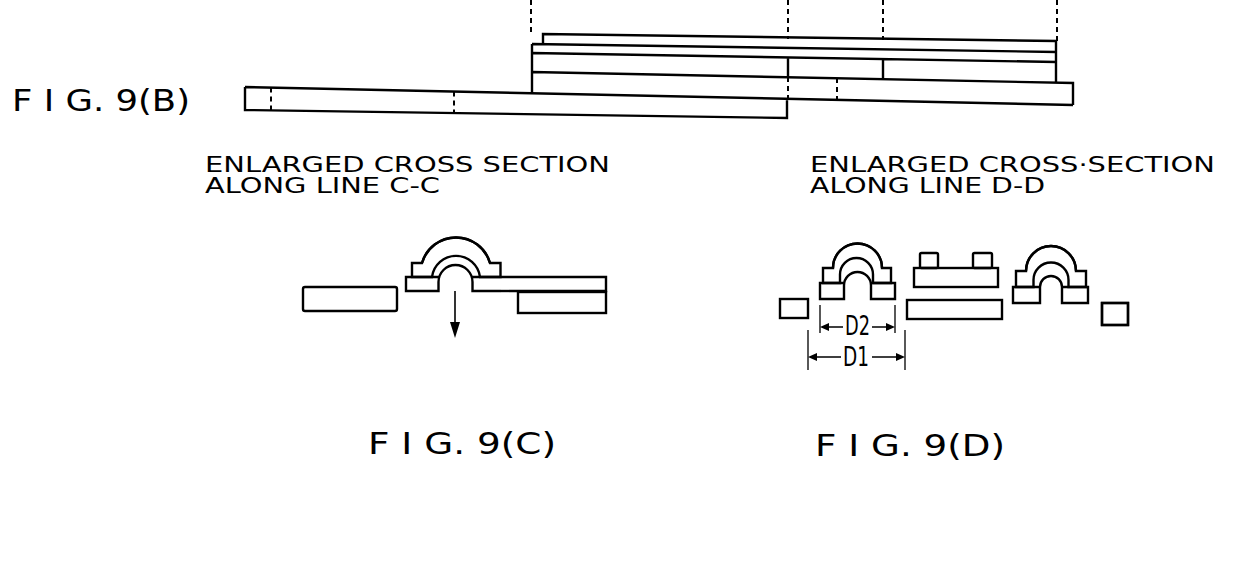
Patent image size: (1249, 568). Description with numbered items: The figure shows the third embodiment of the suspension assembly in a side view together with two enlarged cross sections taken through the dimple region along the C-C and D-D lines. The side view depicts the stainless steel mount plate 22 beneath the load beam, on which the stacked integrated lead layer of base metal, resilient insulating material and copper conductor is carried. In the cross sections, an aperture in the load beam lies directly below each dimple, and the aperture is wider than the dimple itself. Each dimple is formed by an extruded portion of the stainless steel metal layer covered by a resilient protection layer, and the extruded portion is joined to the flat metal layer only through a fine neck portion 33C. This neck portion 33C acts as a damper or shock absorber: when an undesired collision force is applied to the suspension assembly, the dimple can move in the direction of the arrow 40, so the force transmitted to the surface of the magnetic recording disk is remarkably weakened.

The mount plate 22 is at (787, 105).
The neck portion 33C is at (508, 286).
The arrow 40 is at (443, 328).